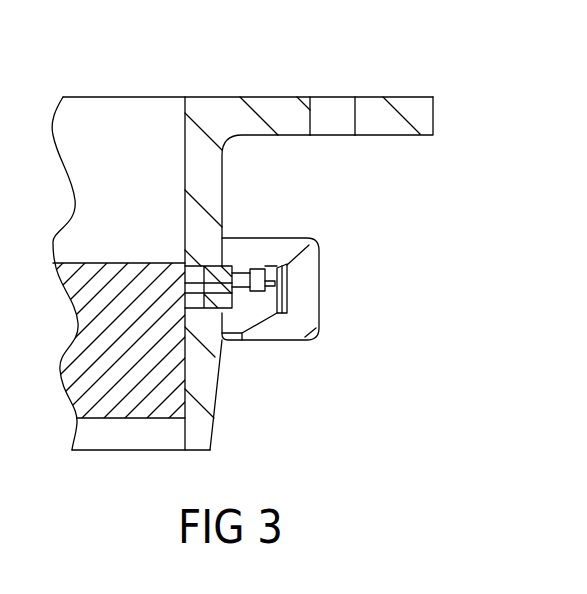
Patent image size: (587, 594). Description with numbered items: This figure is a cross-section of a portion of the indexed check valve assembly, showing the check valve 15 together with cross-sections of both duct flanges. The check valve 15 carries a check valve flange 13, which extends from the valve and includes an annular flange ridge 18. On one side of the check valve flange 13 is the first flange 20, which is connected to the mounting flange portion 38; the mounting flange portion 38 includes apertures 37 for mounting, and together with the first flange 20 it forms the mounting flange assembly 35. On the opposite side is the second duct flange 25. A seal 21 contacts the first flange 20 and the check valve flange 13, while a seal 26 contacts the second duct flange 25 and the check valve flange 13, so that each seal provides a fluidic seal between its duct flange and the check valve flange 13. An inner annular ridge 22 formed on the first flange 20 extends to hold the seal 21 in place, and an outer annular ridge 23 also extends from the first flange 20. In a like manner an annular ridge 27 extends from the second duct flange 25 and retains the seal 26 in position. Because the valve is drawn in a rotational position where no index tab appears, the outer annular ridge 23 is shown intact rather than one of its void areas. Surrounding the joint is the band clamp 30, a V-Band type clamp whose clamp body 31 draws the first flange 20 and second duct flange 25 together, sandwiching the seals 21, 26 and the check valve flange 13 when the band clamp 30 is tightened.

The check valve flange 13 is at (234, 309).
The check valve 15 is at (88, 365).
The annular flange ridge 18 is at (277, 272).
The first flange 20 is at (209, 176).
The seal 21 is at (220, 270).
The inner annular ridge 22 is at (253, 275).
The outer annular ridge 23 is at (285, 287).
The second duct flange 25 is at (198, 422).
The seal 26 is at (208, 305).
The annular ridge 27 is at (280, 288).
The band clamp 30 is at (327, 316).
The clamp body 31 is at (305, 295).
The mounting flange assembly 35 is at (449, 108).
The apertures 37 is at (332, 94).
The mounting flange portion 38 is at (395, 105).